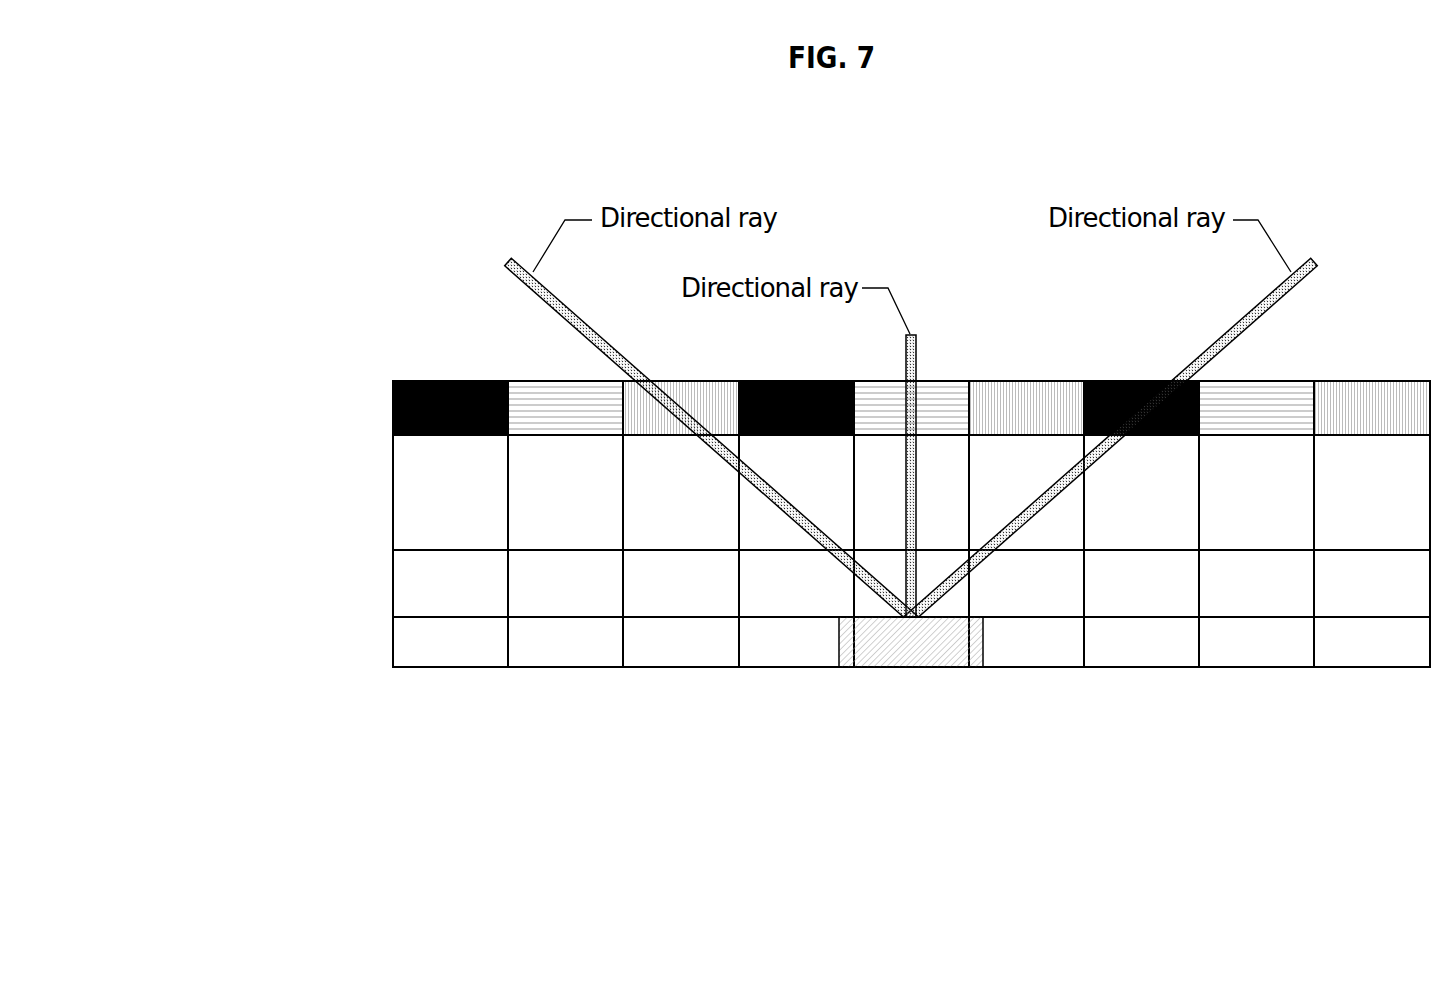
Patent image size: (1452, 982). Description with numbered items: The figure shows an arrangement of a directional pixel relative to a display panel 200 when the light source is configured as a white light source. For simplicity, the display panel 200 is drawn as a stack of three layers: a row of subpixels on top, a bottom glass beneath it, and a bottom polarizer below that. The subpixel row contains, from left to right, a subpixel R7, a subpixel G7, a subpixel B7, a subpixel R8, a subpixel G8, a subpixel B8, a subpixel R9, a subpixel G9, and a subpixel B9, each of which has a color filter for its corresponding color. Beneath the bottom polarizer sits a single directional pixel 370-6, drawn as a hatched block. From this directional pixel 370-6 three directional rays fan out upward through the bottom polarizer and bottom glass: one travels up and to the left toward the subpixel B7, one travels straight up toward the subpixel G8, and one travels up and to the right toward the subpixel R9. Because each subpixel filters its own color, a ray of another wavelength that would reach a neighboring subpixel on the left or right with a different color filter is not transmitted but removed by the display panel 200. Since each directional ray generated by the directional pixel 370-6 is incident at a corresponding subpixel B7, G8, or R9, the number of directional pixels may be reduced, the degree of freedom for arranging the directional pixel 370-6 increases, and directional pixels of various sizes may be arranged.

The display panel 200 is at (751, 522).
The directional pixel 370-6 is at (912, 648).
The subpixel R7 is at (450, 408).
The subpixel G7 is at (565, 408).
The subpixel B7 is at (681, 408).
The subpixel R8 is at (796, 408).
The subpixel G8 is at (911, 408).
The subpixel B8 is at (1026, 408).
The subpixel R9 is at (1141, 408).
The subpixel G9 is at (1256, 408).
The subpixel B9 is at (1372, 408).